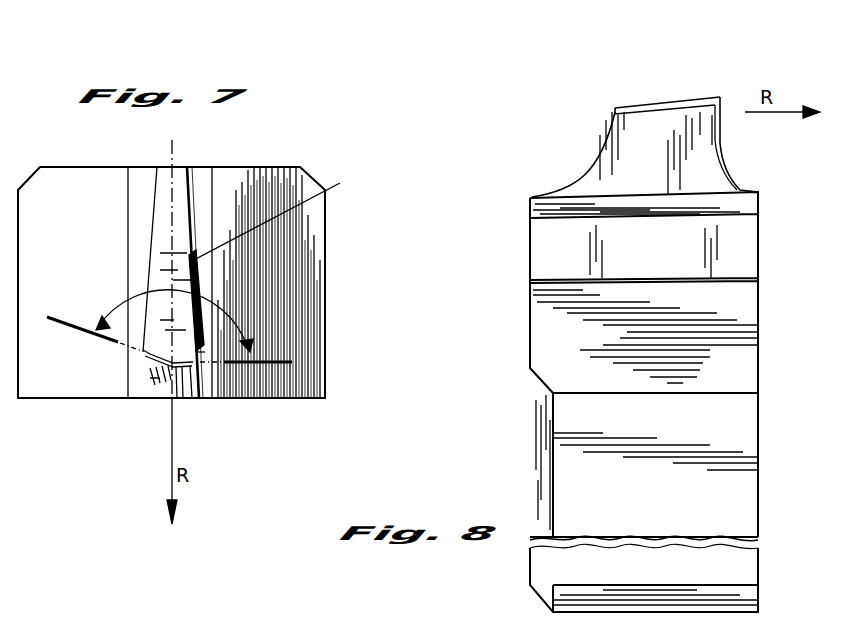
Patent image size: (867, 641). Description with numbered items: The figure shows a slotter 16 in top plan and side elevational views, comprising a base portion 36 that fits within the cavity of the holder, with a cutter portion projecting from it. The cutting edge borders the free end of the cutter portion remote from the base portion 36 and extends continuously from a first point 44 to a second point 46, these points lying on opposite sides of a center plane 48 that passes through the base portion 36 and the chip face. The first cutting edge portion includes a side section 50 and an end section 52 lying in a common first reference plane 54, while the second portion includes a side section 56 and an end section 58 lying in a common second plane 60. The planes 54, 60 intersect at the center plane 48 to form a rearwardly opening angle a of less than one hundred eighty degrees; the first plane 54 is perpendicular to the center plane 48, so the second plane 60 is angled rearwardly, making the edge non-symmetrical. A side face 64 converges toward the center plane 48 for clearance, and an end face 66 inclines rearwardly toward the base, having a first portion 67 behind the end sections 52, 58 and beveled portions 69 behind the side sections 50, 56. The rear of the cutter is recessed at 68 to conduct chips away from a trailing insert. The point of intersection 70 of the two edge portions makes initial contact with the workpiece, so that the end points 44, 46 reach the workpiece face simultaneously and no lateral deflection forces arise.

In FIG. 7, the slotter 16 is at (262, 162).
In FIG. 8, the slotter 16 is at (782, 240).
In FIG. 8, the base portion 36 is at (755, 488).
In FIG. 7, the first point 44 is at (200, 357).
In FIG. 7, the second point 46 is at (143, 351).
In FIG. 7, the center plane 48 is at (171, 154).
In FIG. 7, the side section 50 is at (197, 362).
In FIG. 7, the end section 52 is at (180, 370).
In FIG. 7, the first reference plane 54 is at (282, 355).
In FIG. 7, the side section 56 is at (147, 358).
In FIG. 7, the end section 58 is at (163, 367).
In FIG. 7, the second plane 60 is at (62, 318).
In FIG. 8, the side face 64 is at (667, 160).
In FIG. 8, the end face 66 is at (687, 100).
In FIG. 7, the first portion 67 is at (340, 183).
In FIG. 7, the recess 68 is at (178, 198).
In FIG. 8, the recess 68 is at (575, 175).
In FIG. 7, the beveled portion 69 is at (153, 267).
In FIG. 8, the beveled portion 69 is at (664, 108).
In FIG. 8, the point of intersection 70 is at (722, 96).
In FIG. 7, the angle α a is at (237, 310).